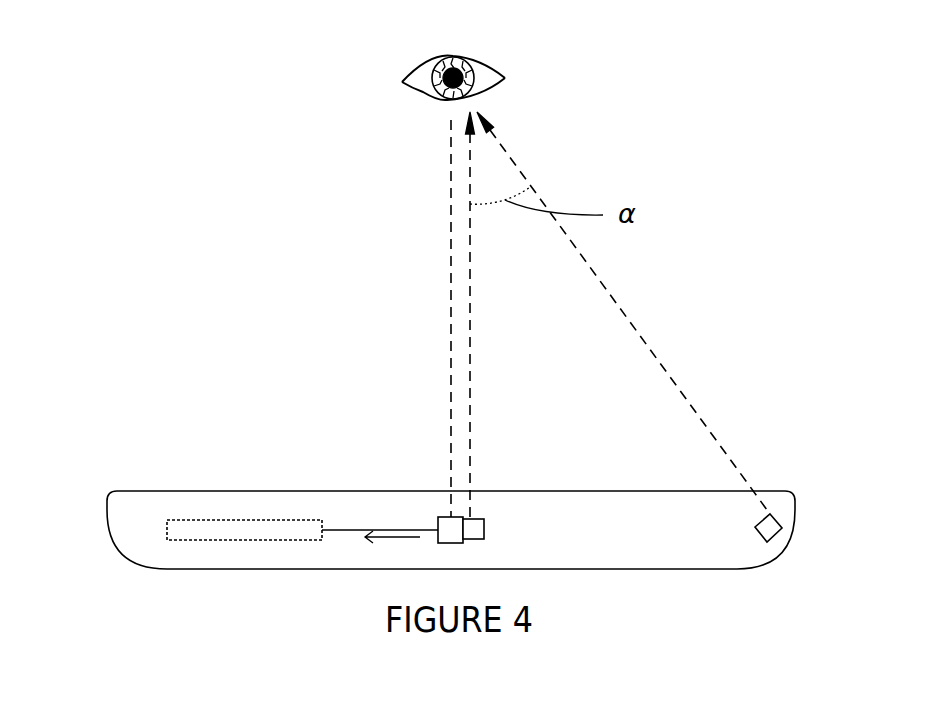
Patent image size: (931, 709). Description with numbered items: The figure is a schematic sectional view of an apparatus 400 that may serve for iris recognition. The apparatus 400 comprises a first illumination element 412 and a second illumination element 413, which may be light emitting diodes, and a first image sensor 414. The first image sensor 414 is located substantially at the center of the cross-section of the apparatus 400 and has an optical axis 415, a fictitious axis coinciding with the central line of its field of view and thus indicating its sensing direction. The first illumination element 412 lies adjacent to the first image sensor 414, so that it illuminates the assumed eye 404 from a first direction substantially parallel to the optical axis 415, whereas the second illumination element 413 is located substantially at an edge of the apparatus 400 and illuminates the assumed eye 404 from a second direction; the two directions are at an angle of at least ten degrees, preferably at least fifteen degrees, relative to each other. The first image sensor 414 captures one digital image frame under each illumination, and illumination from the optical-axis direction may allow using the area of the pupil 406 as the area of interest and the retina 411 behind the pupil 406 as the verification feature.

The apparatus 400 is at (137, 559).
The assumed eye 404 is at (463, 65).
The pupil 406 is at (451, 60).
The retina 411 is at (413, 71).
The first illumination element 412 is at (485, 528).
The second illumination element 413 is at (777, 517).
The first image sensor 414 is at (437, 521).
The optical axis 415 is at (452, 348).